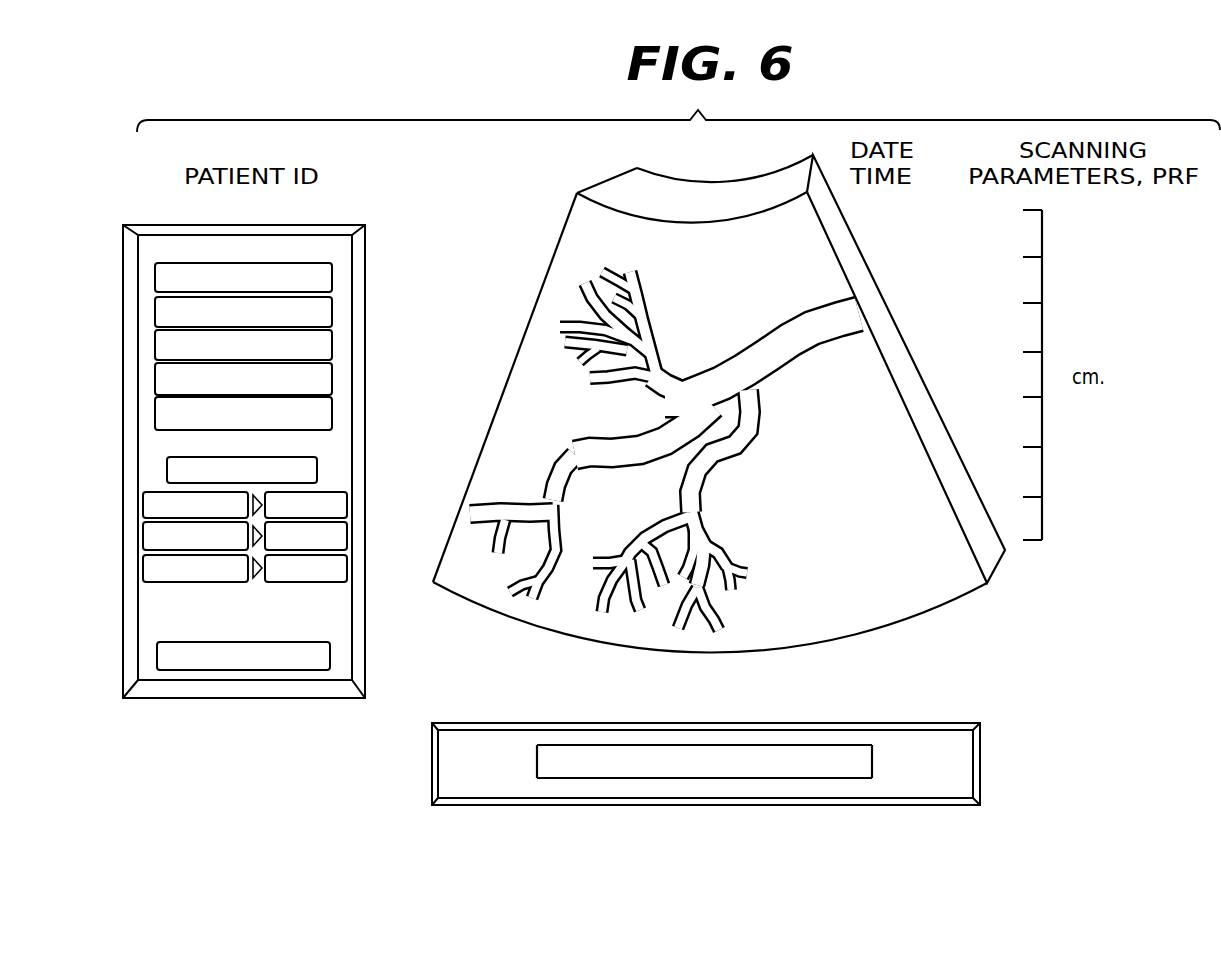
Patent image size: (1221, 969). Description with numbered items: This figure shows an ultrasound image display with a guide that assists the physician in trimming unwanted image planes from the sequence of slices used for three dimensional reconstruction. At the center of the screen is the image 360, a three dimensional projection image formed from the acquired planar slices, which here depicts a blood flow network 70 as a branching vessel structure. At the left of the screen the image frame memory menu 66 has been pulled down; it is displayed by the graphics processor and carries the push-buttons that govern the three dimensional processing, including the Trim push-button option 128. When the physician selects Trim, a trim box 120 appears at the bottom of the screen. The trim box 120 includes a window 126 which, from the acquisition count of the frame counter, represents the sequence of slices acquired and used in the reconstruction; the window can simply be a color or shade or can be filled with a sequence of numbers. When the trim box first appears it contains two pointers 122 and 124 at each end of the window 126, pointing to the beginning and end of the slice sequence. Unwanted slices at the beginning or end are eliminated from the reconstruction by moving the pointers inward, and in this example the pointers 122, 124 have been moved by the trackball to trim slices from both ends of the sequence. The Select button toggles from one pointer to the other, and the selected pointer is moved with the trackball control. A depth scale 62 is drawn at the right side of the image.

The image 360 is at (719, 404).
The blood flow network 70 is at (847, 310).
The depth scale 62 is at (1028, 332).
The image frame memory menu 66 is at (243, 461).
The Trim push-button option 128 is at (168, 420).
The trim box 120 is at (747, 773).
The pointer 122 is at (582, 757).
The pointer 124 is at (794, 760).
The window 126 is at (685, 752).